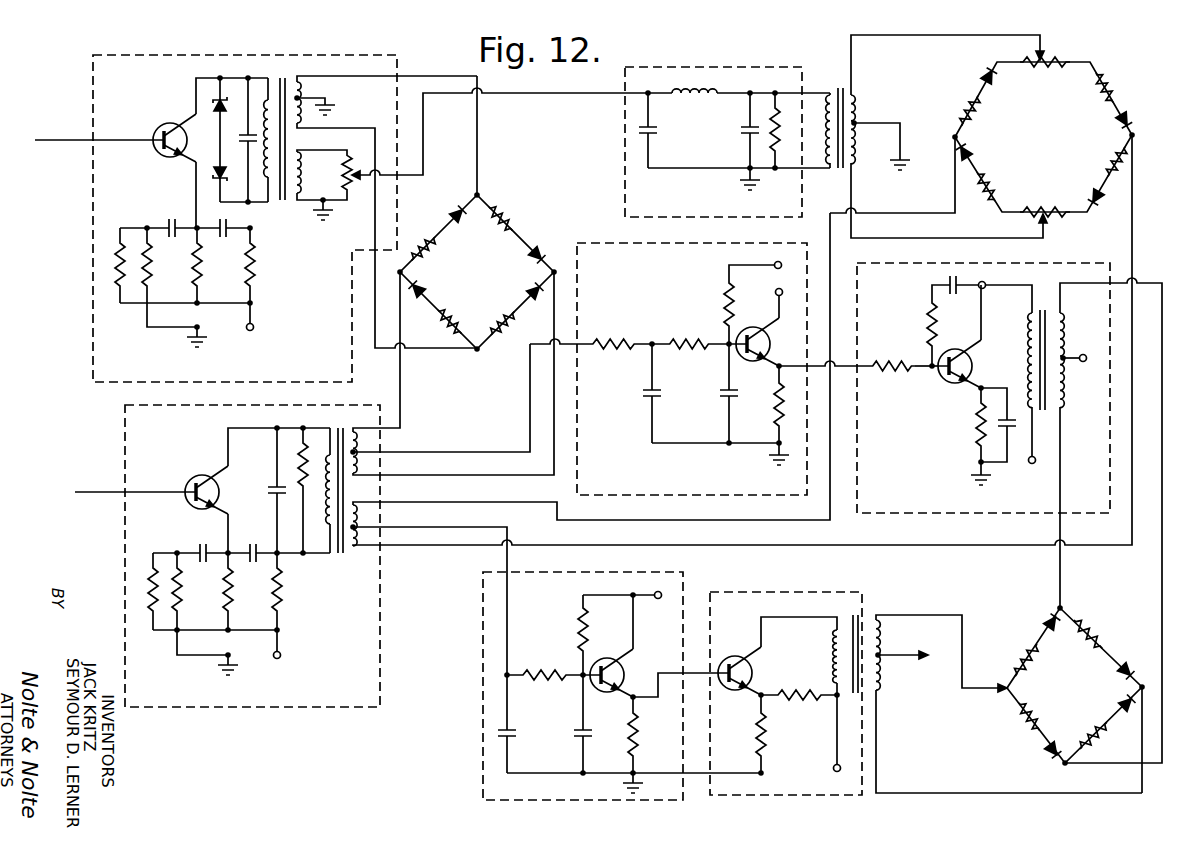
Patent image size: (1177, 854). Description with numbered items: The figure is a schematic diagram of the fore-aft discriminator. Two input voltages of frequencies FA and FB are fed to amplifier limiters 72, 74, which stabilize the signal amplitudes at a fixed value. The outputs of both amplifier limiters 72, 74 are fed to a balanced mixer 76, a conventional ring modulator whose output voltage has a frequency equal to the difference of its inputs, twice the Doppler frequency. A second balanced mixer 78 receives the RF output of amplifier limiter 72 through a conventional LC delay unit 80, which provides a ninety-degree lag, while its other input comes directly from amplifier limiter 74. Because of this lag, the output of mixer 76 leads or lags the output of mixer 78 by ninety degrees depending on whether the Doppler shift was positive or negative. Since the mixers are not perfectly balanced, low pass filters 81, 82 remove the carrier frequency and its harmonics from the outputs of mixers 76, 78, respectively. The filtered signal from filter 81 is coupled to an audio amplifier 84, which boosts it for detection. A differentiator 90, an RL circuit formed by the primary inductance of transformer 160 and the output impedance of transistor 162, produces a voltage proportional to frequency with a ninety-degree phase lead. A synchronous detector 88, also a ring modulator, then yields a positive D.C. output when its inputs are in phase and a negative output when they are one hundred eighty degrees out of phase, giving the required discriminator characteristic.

The amplifier limiter 72 is at (237, 56).
The amplifier limiter 74 is at (366, 707).
The balanced mixer 76 is at (491, 277).
The second balanced mixer 78 is at (1056, 149).
The delay 80 is at (743, 66).
The low pass filter 81 is at (753, 244).
The low pass filter 82 is at (684, 590).
The audio amplifier 84 is at (1099, 263).
The synchronous detector 88 is at (1078, 701).
The differentiator 90 is at (926, 677).
The transformer 160 is at (833, 665).
The transistor 162 is at (745, 690).